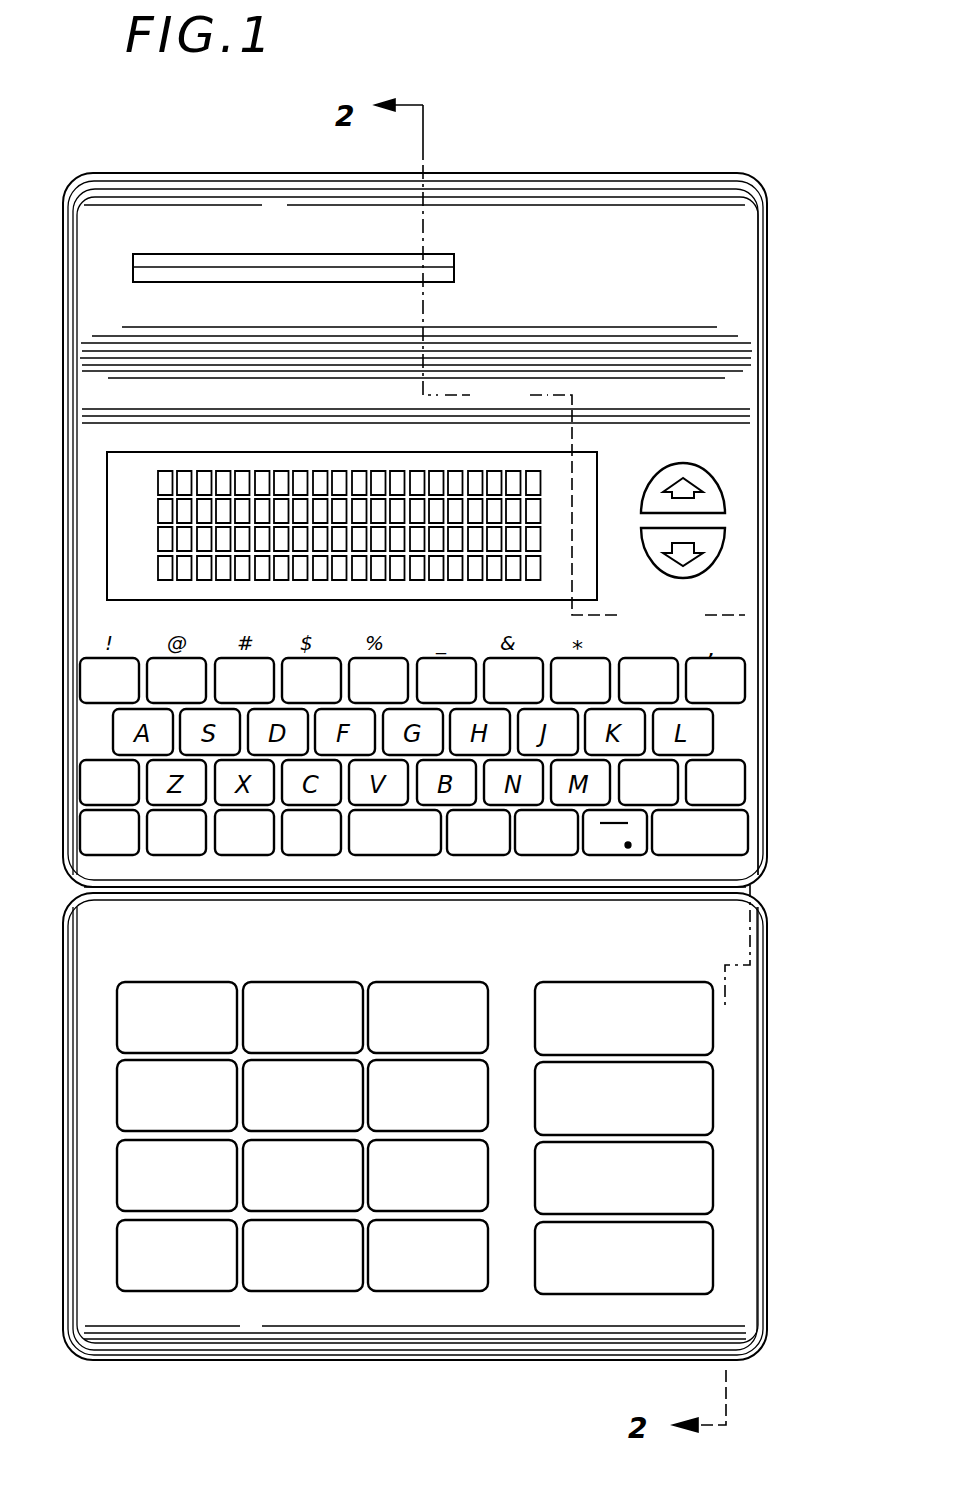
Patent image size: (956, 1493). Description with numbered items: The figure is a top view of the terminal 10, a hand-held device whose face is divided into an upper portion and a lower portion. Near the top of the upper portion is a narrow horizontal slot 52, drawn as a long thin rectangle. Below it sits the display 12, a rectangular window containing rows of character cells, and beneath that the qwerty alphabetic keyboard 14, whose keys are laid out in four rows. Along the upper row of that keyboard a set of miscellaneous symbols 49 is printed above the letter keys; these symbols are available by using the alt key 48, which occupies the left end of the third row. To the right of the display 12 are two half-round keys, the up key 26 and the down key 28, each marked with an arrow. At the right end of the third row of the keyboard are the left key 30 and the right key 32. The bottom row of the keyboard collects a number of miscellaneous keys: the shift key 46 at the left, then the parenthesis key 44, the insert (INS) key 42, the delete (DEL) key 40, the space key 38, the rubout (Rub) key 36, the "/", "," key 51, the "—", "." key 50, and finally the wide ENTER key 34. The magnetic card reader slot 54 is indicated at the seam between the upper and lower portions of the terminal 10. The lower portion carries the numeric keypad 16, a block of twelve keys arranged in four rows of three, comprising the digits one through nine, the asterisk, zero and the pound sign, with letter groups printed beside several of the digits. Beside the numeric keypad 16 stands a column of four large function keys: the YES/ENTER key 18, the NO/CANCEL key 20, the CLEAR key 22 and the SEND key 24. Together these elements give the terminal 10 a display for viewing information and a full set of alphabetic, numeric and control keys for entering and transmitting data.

The terminal 10 is at (800, 385).
The display 12 is at (531, 482).
The qwerty alphabetic keyboard 14 is at (745, 688).
The numeric keypad 16 is at (130, 1079).
The YES/ENTER key 18 is at (682, 996).
The NO/CANCEL key 20 is at (700, 1093).
The CLEAR key 22 is at (705, 1174).
The SEND key 24 is at (705, 1255).
The up key 26 is at (710, 488).
The down key 28 is at (706, 563).
The left key 30 is at (745, 787).
The right key 32 is at (662, 784).
The ENTER key 34 is at (730, 850).
The rubout (Rub) key 36 is at (478, 855).
The space key 38 is at (396, 855).
The delete (DEL) key 40 is at (314, 855).
The insert (INS) key 42 is at (246, 855).
The parenthesis key 44 is at (168, 855).
The shift key 46 is at (88, 847).
The alt key 48 is at (86, 790).
The miscellaneous symbols 49 is at (664, 640).
The "—", "." key 50 is at (615, 855).
The "/", "," key 51 is at (546, 855).
The slot 52 is at (455, 268).
The magnetic card reader slot 54 is at (758, 896).